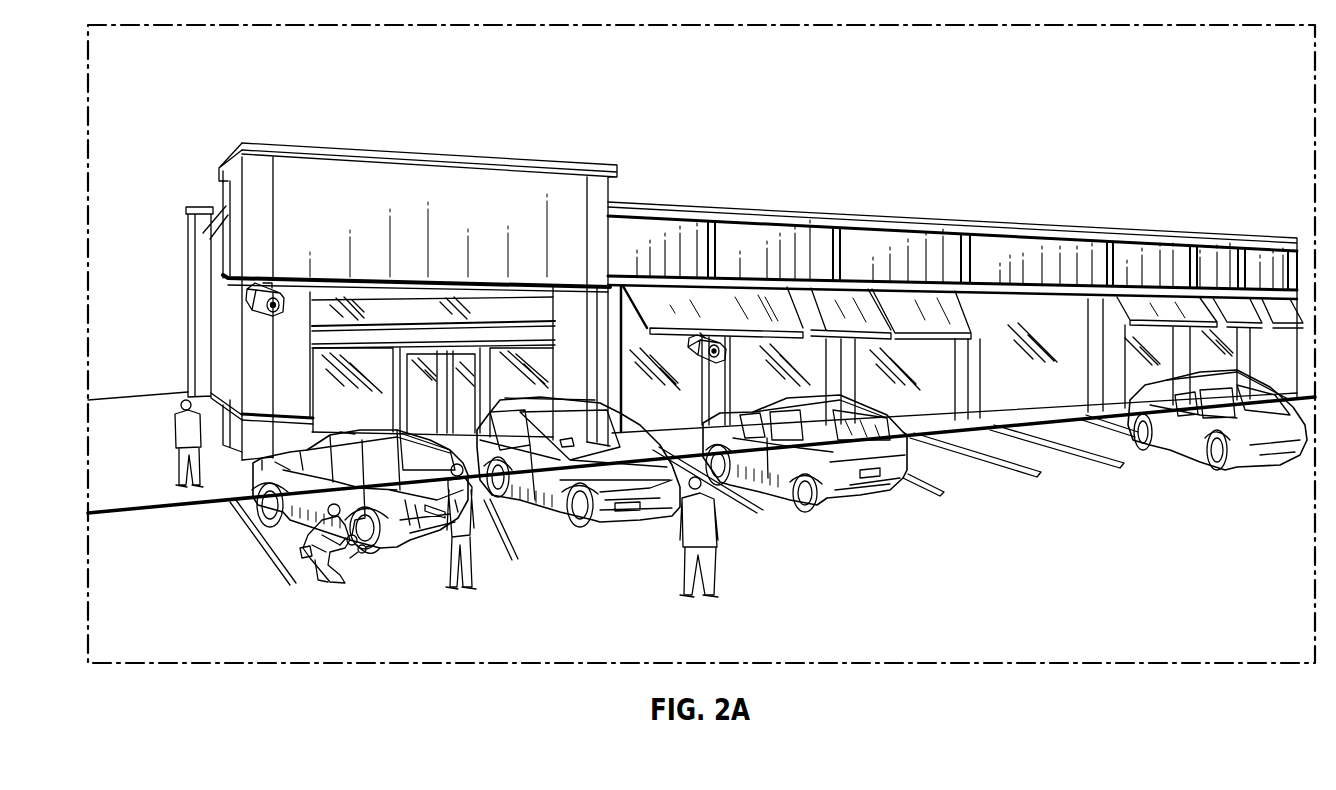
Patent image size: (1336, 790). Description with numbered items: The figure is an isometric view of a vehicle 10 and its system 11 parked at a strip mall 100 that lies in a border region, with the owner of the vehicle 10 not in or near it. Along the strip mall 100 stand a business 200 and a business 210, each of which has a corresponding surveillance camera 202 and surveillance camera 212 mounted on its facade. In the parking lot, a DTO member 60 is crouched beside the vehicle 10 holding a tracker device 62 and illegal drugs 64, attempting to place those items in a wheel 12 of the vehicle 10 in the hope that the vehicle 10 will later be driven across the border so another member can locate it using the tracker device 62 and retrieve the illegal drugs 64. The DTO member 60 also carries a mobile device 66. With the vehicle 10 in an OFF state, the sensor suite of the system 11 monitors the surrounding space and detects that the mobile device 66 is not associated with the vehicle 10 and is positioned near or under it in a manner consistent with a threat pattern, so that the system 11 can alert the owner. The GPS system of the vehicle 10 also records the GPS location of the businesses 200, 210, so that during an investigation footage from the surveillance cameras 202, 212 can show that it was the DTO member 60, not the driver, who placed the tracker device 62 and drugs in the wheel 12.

The strip mall 100 is at (1047, 564).
The business 200 is at (330, 317).
The surveillance camera 202 is at (268, 282).
The business 210 is at (648, 360).
The surveillance camera 212 is at (708, 336).
The vehicle 10 is at (603, 549).
The system 11 is at (525, 557).
The wheel 12 is at (387, 547).
The DTO member 60 is at (327, 590).
The tracker device 62 is at (354, 548).
The illegal drugs 64 is at (362, 549).
The mobile device 66 is at (305, 556).